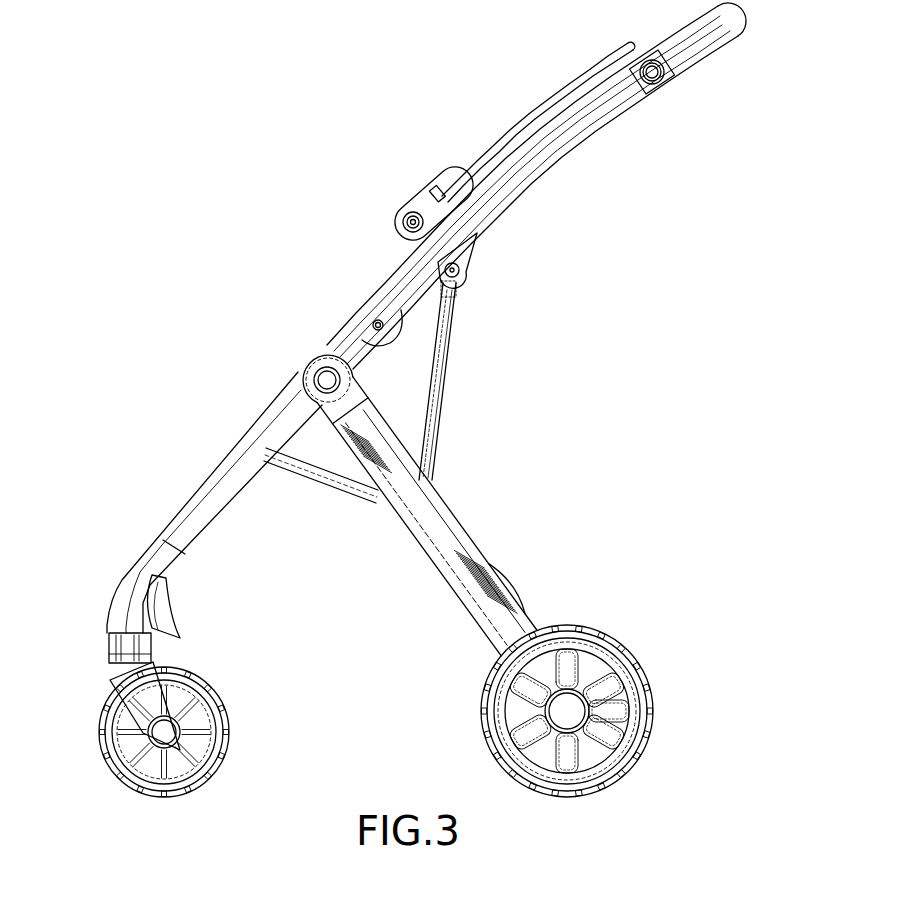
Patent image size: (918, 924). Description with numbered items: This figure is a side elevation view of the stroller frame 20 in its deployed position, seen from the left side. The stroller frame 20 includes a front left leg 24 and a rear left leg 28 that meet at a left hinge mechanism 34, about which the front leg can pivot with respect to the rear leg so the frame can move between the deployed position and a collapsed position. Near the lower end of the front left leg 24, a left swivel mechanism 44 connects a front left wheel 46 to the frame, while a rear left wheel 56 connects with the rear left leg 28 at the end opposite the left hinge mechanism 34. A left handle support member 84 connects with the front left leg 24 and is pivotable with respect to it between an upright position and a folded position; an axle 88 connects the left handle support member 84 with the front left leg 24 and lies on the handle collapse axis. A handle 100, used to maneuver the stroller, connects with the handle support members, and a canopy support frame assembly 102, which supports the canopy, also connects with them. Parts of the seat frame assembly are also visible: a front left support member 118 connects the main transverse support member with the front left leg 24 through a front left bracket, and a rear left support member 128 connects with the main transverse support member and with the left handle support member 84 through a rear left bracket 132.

The stroller frame 20 is at (149, 172).
The front left leg 24 is at (223, 483).
The rear left leg 28 is at (466, 554).
The left hinge mechanism 34 is at (298, 344).
The left swivel mechanism 44 is at (97, 660).
The front left wheel 46 is at (111, 740).
The rear left wheel 56 is at (640, 677).
The left handle support member 84 is at (511, 192).
The axle 88 is at (379, 320).
The handle 100 is at (734, 20).
The canopy support frame assembly 102 is at (461, 138).
The front left support member 118 is at (310, 468).
The rear left support member 128 is at (438, 365).
The rear left bracket 132 is at (463, 256).